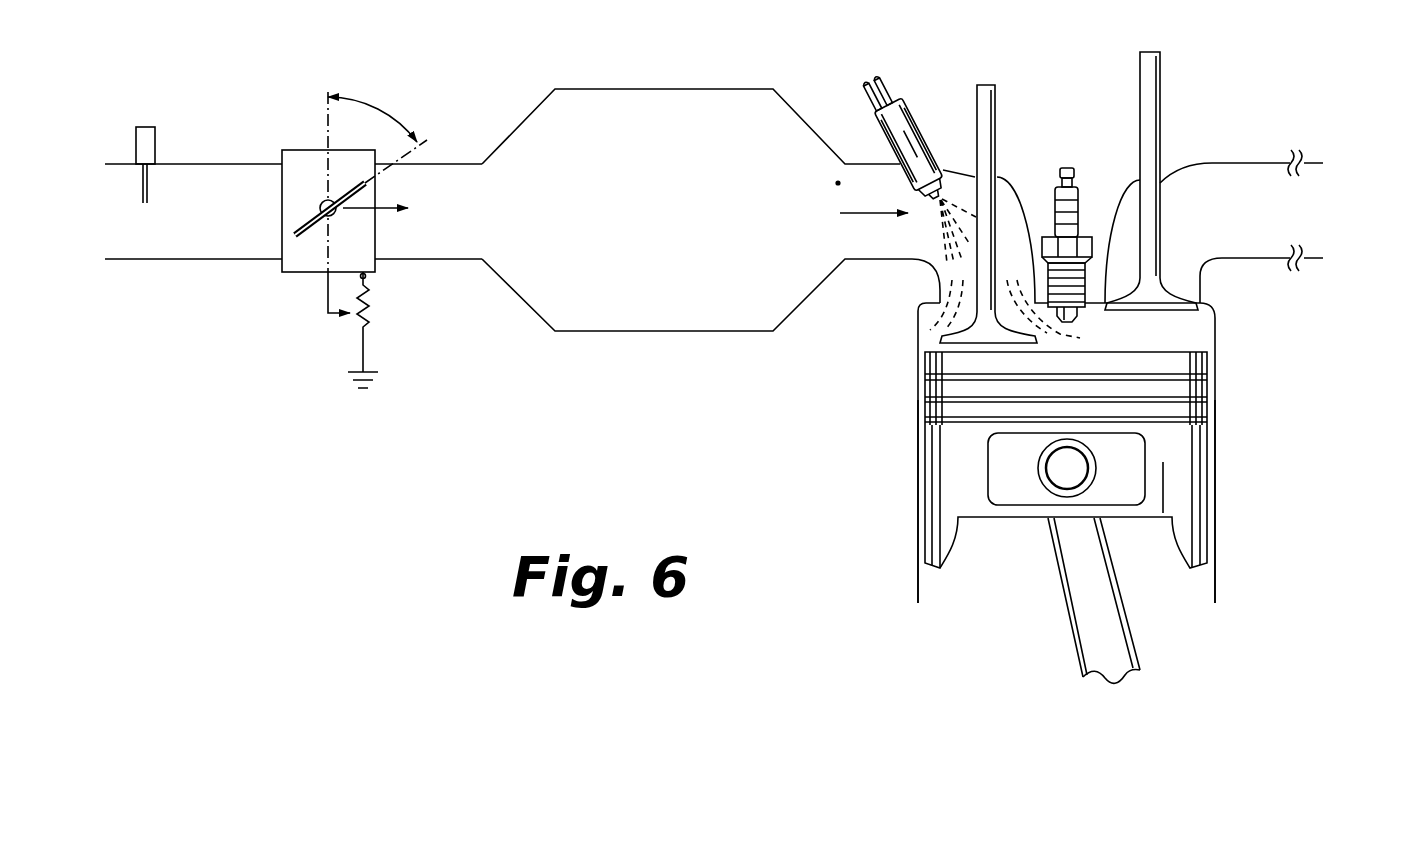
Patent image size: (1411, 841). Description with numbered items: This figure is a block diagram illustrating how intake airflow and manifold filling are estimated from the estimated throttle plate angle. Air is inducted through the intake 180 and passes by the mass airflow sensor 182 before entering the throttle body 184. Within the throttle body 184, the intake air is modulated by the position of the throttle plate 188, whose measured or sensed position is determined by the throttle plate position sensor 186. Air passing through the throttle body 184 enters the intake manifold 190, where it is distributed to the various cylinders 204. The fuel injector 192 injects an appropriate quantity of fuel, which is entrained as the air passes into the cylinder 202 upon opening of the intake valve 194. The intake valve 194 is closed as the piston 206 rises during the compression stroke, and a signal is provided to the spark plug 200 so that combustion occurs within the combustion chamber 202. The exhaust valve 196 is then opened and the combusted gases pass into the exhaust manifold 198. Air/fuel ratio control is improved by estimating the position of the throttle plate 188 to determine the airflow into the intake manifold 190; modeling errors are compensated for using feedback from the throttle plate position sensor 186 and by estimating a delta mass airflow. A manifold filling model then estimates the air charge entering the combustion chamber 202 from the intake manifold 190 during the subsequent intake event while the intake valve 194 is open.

The intake 180 is at (196, 232).
The mass airflow sensor 182 is at (133, 145).
The throttle body 184 is at (290, 278).
The throttle plate position sensor 186 is at (347, 331).
The throttle plate 188 is at (301, 226).
The intake manifold 190 is at (605, 340).
The fuel injector 192 is at (921, 126).
The intake valve 194 is at (997, 117).
The exhaust valve 196 is at (1162, 145).
The exhaust manifold 198 is at (1292, 213).
The spark plug 200 is at (1066, 168).
The combustion chamber 202 is at (1196, 338).
The cylinders 204 is at (1218, 440).
The piston 206 is at (953, 455).